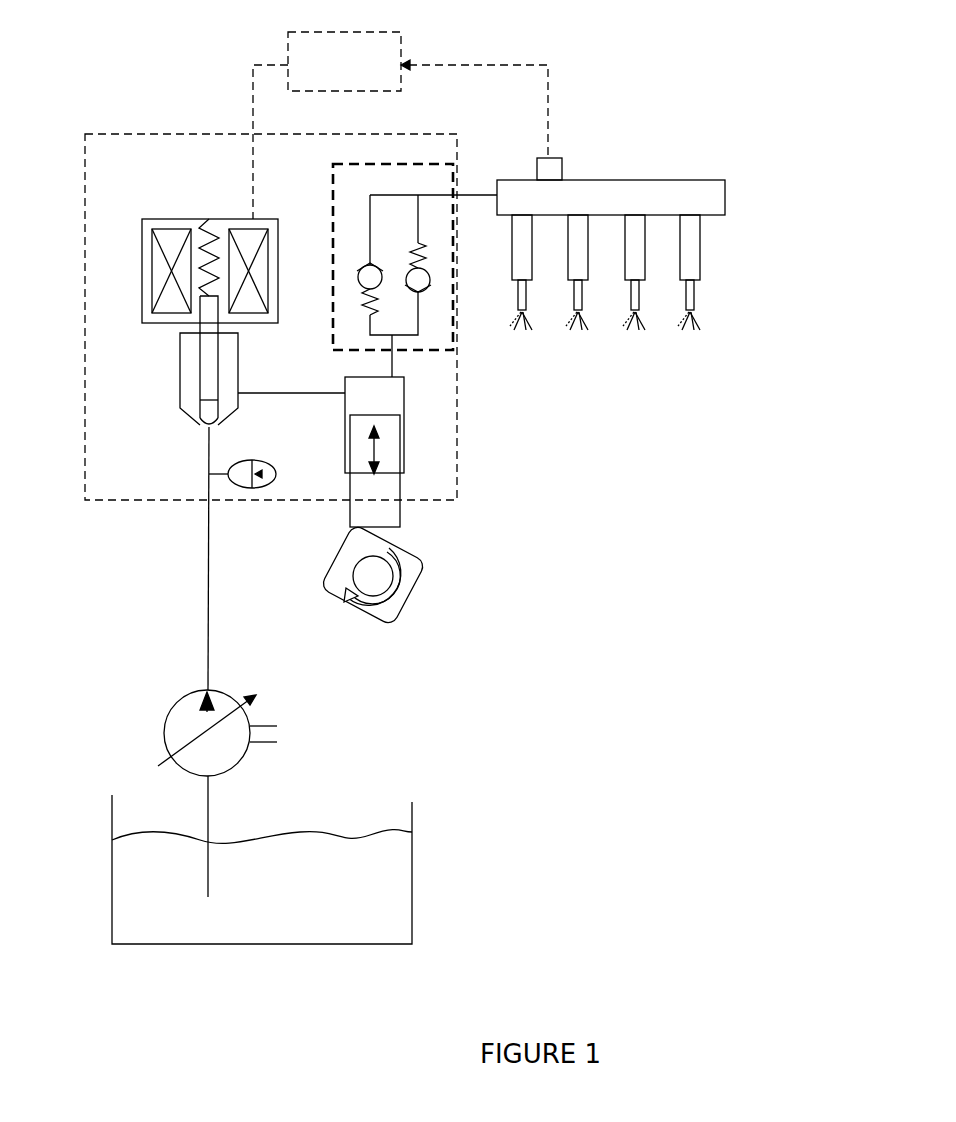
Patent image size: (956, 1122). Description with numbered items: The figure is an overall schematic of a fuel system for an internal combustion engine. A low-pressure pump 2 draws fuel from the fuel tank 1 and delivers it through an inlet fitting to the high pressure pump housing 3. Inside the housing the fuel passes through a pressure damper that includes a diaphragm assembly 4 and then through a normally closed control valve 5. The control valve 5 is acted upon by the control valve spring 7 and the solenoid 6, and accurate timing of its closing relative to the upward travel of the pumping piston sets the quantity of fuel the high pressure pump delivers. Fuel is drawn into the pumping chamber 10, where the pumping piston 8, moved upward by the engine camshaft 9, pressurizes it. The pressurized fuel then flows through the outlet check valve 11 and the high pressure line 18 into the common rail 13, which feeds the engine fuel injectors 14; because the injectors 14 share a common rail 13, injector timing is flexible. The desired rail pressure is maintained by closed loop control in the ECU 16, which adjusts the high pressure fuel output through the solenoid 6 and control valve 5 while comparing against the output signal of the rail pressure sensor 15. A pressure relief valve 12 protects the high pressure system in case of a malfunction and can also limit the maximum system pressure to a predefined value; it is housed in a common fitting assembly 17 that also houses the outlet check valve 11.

The fuel tank 1 is at (410, 869).
The low-pressure pump 2 is at (175, 703).
The high pressure pump housing 3 is at (165, 136).
The diaphragm assembly 4 is at (243, 488).
The control valve 5 is at (205, 425).
The solenoid 6 is at (166, 312).
The control valve spring 7 is at (207, 230).
The pumping piston 8 is at (402, 445).
The engine camshaft 9 is at (418, 578).
The pumping chamber 10 is at (375, 397).
The outlet check valve 11 is at (422, 292).
The pressure relief valve 12 is at (291, 375).
The common rail 13 is at (654, 178).
The fuel injectors 14 is at (698, 250).
The rail pressure sensor 15 is at (556, 160).
The ECU 16 is at (400, 30).
The common fitting assembly 17 is at (455, 316).
The high pressure line 18 is at (471, 192).